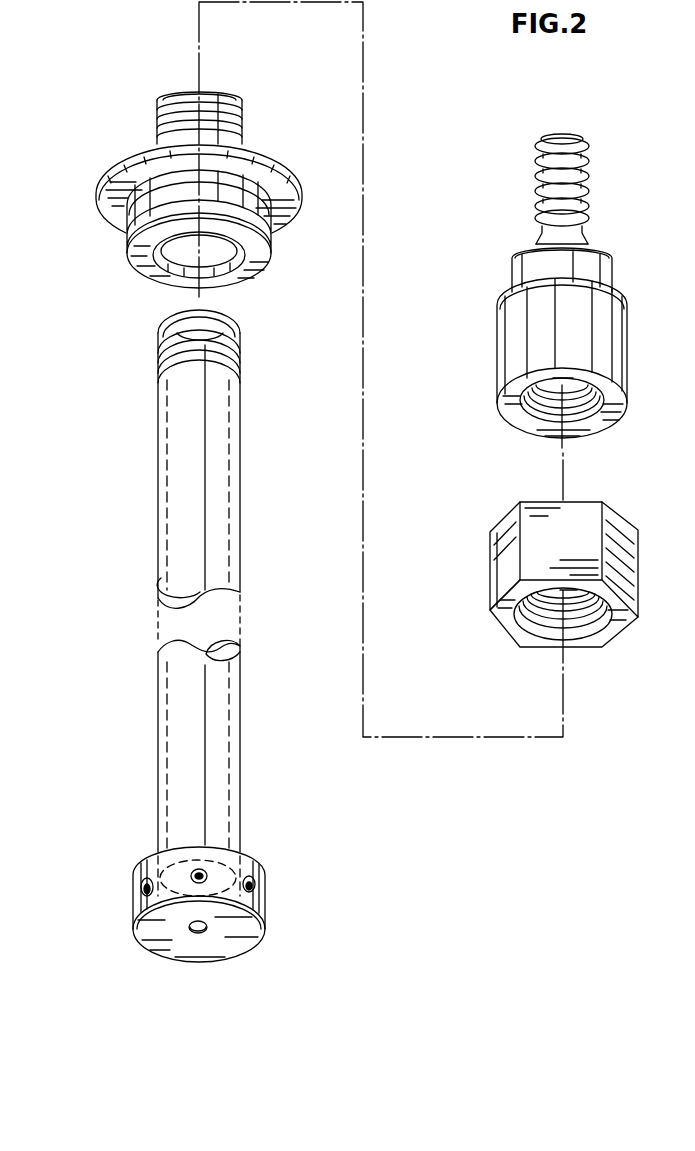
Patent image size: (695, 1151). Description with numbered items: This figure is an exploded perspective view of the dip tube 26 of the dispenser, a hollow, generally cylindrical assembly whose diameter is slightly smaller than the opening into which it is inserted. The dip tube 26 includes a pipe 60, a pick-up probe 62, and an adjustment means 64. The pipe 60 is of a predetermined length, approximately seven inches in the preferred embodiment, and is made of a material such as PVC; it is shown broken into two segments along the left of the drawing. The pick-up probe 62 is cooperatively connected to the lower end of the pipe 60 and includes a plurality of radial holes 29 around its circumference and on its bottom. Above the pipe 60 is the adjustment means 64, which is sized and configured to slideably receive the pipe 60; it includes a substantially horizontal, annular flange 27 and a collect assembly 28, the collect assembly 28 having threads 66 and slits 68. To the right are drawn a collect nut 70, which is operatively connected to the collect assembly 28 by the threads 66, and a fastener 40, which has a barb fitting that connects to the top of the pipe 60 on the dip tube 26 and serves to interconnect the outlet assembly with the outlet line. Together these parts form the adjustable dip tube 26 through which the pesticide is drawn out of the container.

The dip tube 26 is at (66, 177).
The annular flange 27 is at (101, 210).
The collect assembly 28 is at (157, 126).
The radial holes 29 is at (255, 886).
The fastener 40 is at (612, 281).
The pipe 60 is at (160, 495).
The pick-up probe 62 is at (144, 864).
The adjustment means 64 is at (117, 53).
The threads 66 is at (242, 123).
The slits 68 is at (210, 93).
The collect nut 70 is at (628, 577).